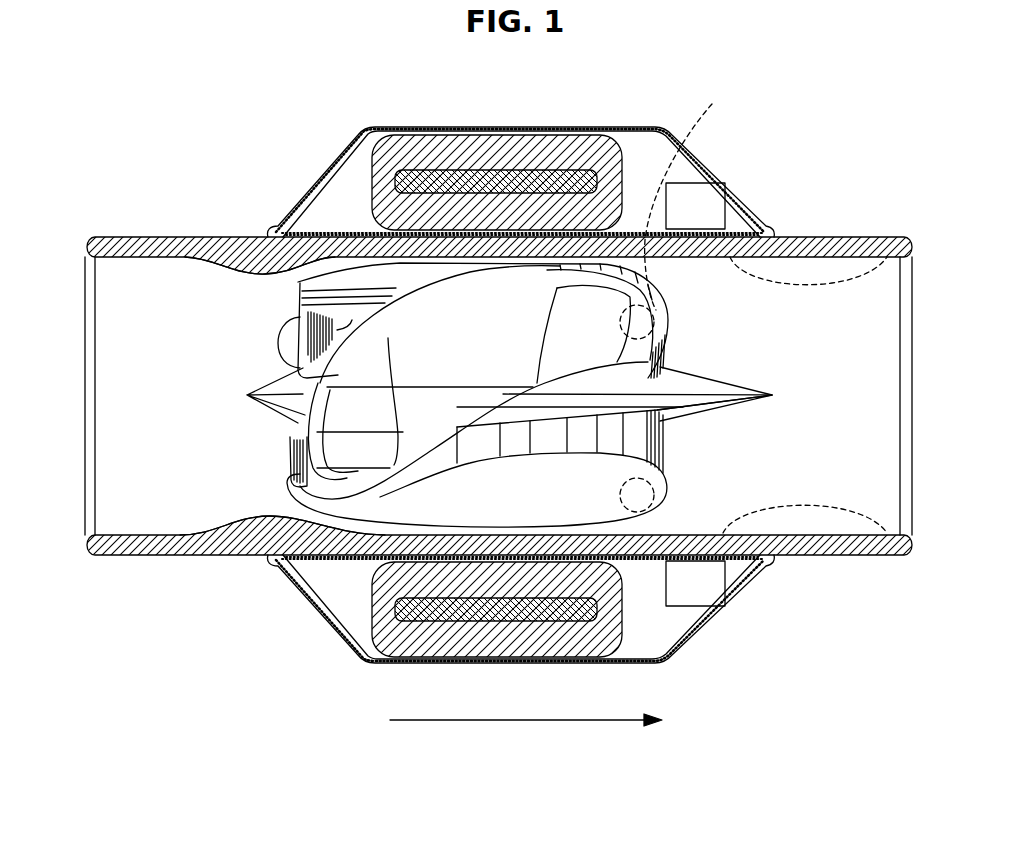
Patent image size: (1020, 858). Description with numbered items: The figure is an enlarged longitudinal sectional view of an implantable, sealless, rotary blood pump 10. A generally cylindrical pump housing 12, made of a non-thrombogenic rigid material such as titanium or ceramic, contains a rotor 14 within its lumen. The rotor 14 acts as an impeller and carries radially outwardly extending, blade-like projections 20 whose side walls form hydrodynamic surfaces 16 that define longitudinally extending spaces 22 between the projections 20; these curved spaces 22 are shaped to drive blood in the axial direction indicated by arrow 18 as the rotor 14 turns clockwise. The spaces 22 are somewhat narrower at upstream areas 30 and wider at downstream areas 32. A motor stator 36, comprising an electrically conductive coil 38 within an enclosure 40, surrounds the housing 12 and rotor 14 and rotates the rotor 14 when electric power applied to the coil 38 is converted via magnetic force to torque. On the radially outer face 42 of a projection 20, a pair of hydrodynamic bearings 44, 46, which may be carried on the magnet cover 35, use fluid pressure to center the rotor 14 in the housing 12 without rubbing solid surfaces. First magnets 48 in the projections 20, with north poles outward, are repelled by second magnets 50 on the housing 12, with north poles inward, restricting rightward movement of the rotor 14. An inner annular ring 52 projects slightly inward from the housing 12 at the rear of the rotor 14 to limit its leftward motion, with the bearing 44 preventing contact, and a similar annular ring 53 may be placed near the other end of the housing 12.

The blood pump 10 is at (160, 222).
The pump housing 12 is at (830, 238).
The rotor 14 is at (680, 296).
The hydrodynamic surfaces 16 is at (345, 330).
The arrow 18 is at (432, 722).
The blade-like projections 20 is at (333, 287).
The longitudinally extending spaces 22 is at (340, 476).
The upstream areas 30 is at (335, 500).
The downstream areas 32 is at (650, 370).
The magnet cover 35 is at (415, 333).
The motor stator 36 is at (588, 113).
The electrically conductive coil 38 is at (425, 147).
The enclosure 40 is at (660, 130).
The radially outer face 42 is at (568, 334).
The hydrodynamic bearing 44 is at (343, 446).
The hydrodynamic bearing 46 is at (570, 310).
The first magnets 48 is at (655, 495).
The second magnets 50 is at (715, 195).
The inner annular ring 52 is at (243, 262).
The annular ring 53 is at (853, 277).